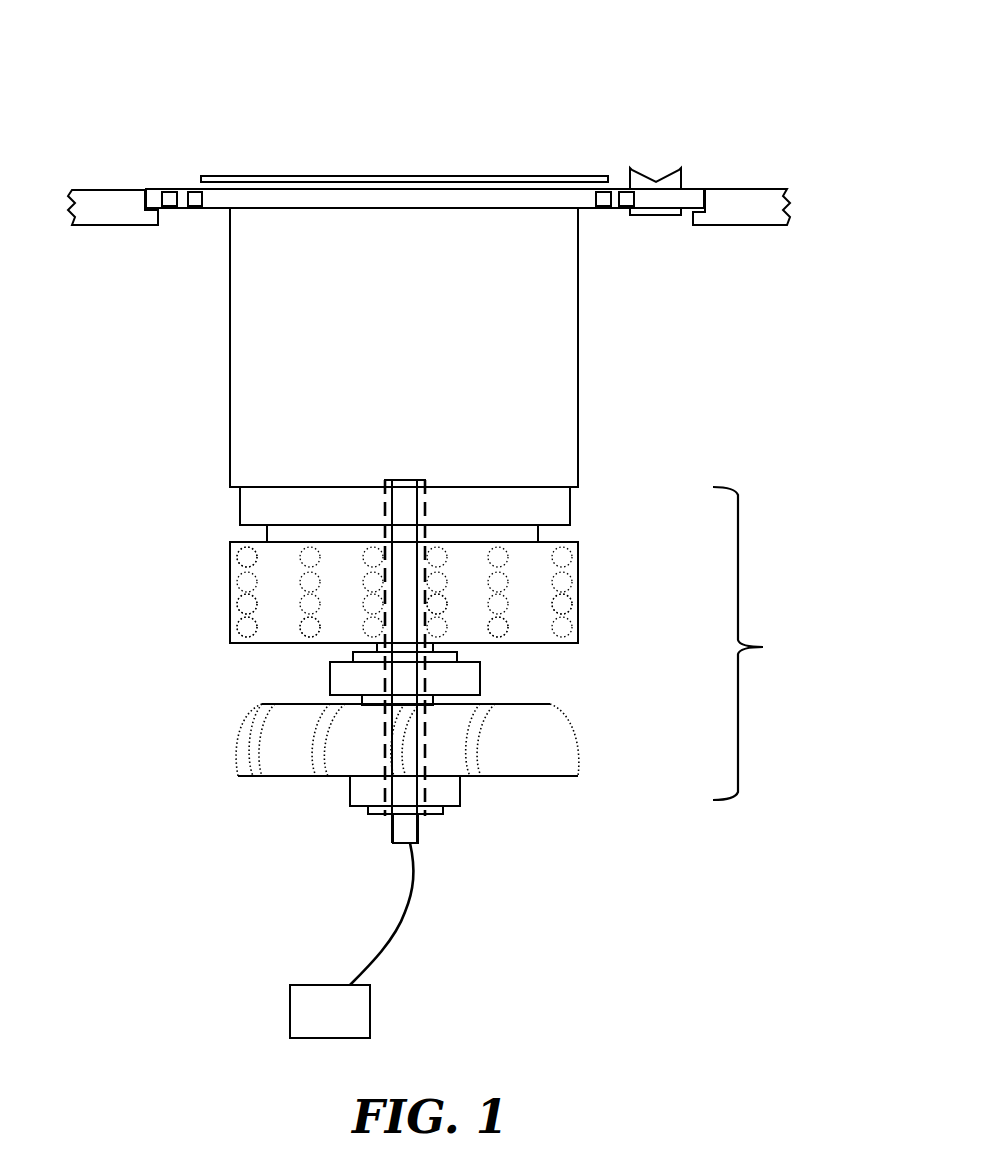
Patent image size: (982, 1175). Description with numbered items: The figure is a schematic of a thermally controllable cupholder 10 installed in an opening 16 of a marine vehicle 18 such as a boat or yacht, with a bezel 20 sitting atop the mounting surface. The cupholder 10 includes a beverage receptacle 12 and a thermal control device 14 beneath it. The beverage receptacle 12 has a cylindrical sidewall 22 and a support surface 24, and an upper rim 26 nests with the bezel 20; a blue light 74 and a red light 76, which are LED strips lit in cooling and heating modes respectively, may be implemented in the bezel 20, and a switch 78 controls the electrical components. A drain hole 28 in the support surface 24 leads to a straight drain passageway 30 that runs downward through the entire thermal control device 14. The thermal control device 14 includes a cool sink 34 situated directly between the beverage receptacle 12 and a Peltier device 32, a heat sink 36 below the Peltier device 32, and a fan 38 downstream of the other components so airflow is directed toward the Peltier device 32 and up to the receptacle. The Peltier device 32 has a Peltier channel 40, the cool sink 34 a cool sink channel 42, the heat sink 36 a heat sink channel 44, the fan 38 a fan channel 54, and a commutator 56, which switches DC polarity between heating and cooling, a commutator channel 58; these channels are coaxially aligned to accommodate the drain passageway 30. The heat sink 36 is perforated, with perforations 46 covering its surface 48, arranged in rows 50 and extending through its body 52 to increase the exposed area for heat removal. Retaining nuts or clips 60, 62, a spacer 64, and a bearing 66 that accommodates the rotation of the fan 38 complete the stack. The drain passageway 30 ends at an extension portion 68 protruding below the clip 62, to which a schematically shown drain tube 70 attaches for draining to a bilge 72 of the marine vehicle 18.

The thermally controllable cupholder 10 is at (620, 65).
The beverage receptacle 12 is at (568, 343).
The thermal control device 14 is at (765, 643).
The opening 16 is at (148, 190).
The marine vehicle 18 is at (88, 195).
The bezel 20 is at (700, 189).
The cylindrical sidewall 22 is at (230, 322).
The support surface 24 is at (257, 485).
The upper rim 26 is at (590, 175).
The drain hole 28 is at (418, 480).
The drain passageway 30 is at (410, 506).
The Peltier device 32 is at (540, 530).
The cool sink 34 is at (240, 500).
The heat sink 36 is at (235, 572).
The fan 38 is at (240, 752).
The Peltier channel 40 is at (395, 520).
The cool sink channel 42 is at (388, 490).
The heat sink channel 44 is at (425, 605).
The perforations 46 is at (565, 603).
The surface 48 is at (238, 550).
The rows 50 is at (310, 628).
The body 52 is at (245, 602).
The fan channel 54 is at (420, 757).
The commutator 56 is at (338, 680).
The commutator channel 58 is at (420, 683).
The retaining nut or clip 60 is at (377, 702).
The retaining nut or clip 62 is at (365, 812).
The spacer 64 is at (353, 655).
The bearing 66 is at (353, 792).
The extension portion 68 is at (415, 835).
The drain tube 70 is at (407, 912).
The bilge 72 is at (330, 1011).
The blue light 74 is at (196, 207).
The red light 76 is at (167, 207).
The switch 78 is at (665, 170).